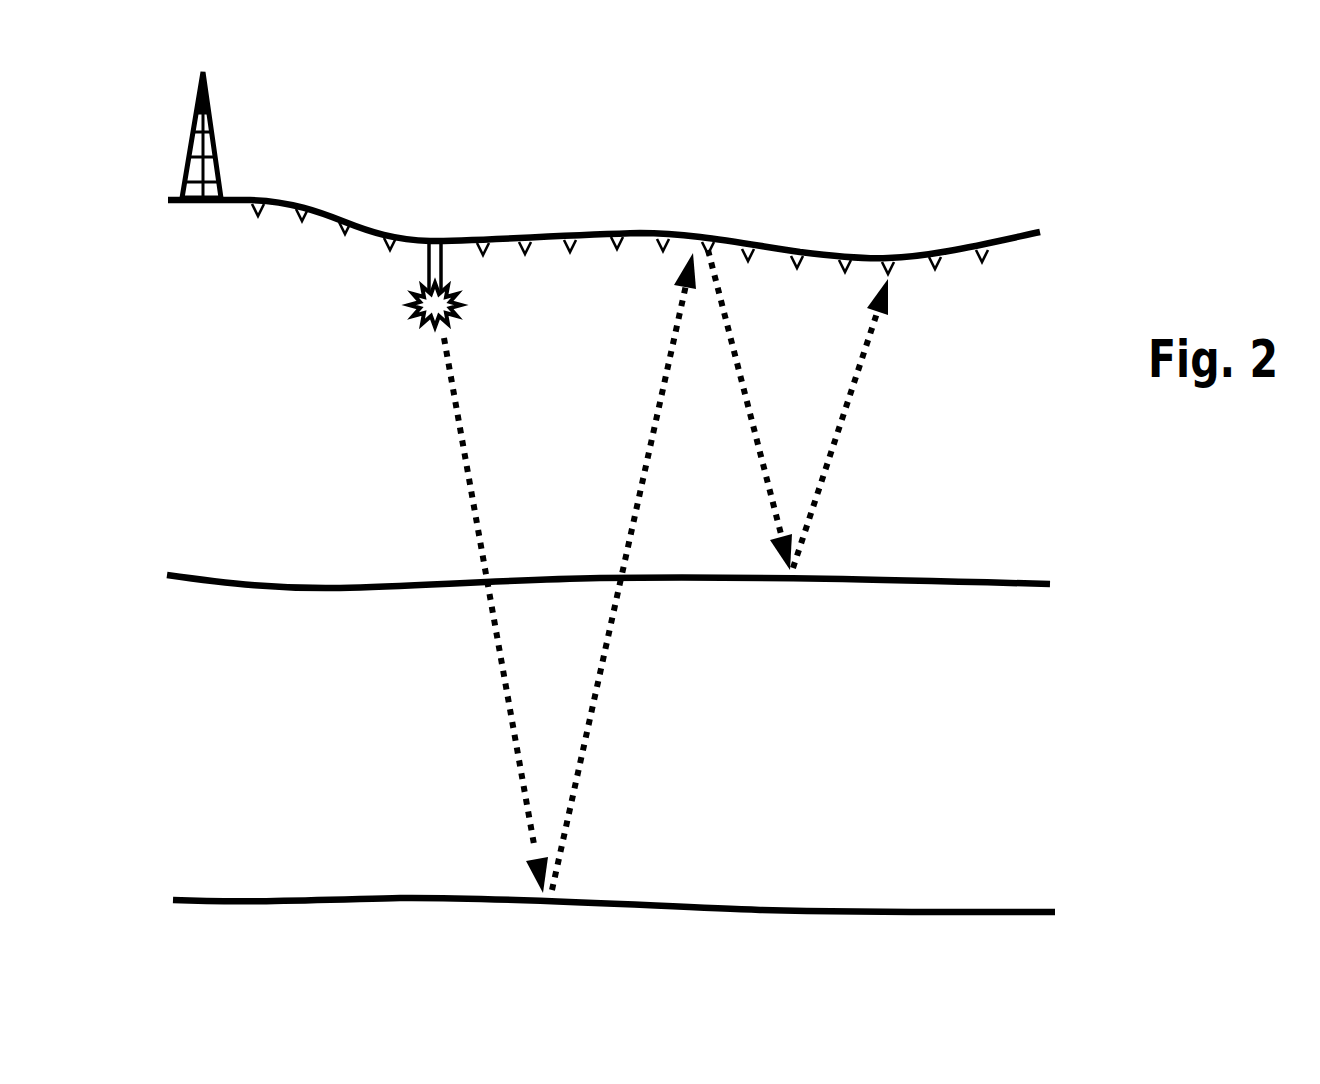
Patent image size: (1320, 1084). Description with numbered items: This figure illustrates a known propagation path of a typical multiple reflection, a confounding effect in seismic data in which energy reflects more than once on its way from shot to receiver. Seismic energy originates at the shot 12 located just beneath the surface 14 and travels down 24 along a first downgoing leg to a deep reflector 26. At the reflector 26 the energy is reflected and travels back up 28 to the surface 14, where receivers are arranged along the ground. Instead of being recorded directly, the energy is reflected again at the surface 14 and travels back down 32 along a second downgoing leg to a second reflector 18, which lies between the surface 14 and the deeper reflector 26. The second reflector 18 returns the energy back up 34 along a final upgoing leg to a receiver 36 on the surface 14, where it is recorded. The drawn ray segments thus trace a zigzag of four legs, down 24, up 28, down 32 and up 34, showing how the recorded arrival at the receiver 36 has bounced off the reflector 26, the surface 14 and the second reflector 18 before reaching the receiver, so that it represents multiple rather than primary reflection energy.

The shot 12 is at (412, 328).
The surface 14 is at (640, 229).
The second reflector 18 is at (857, 591).
The down path 24 is at (497, 702).
The reflector 26 is at (614, 855).
The up path 28 is at (607, 702).
The down path 32 is at (758, 480).
The up path 34 is at (848, 452).
The receiver 36 is at (888, 250).